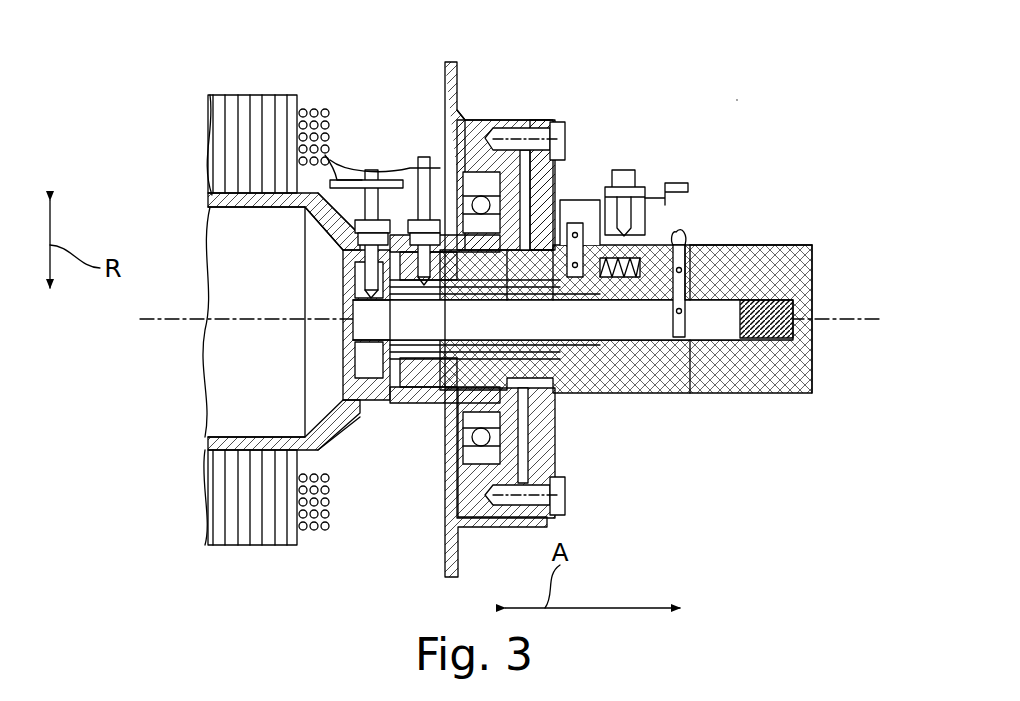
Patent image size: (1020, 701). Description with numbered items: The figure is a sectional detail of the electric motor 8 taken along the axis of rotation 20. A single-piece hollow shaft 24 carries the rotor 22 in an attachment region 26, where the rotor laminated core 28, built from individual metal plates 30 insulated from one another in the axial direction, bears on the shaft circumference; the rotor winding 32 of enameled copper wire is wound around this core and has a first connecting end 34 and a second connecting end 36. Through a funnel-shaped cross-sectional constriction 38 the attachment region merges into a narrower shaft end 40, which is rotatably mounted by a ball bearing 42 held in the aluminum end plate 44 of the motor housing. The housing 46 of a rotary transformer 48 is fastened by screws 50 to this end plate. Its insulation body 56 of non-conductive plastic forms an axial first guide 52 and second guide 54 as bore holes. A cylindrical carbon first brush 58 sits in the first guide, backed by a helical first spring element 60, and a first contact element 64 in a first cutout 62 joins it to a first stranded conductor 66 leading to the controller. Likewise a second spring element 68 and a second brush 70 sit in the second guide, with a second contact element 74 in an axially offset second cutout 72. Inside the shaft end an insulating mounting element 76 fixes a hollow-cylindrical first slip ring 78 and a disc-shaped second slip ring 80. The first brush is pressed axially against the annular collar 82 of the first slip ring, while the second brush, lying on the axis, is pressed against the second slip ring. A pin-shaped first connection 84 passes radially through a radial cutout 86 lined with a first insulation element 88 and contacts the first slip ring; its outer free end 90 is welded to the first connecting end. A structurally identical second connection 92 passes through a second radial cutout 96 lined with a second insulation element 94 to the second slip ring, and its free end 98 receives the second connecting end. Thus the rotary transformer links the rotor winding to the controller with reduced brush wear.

The electric motor 8 is at (737, 100).
The axis of rotation 20 is at (205, 330).
The rotor 22 is at (268, 140).
The hollow shaft 24 is at (208, 200).
The attachment region 26 is at (215, 190).
The rotor laminated core 28 is at (240, 140).
The individual metal plates 30 is at (215, 540).
The rotor winding 32 is at (314, 113).
The first connecting end 34 is at (403, 165).
The second connecting end 36 is at (338, 150).
The cross-sectional constriction 38 is at (305, 425).
The shaft end 40 is at (405, 403).
The bearing 42 is at (500, 120).
The end plate 44 is at (452, 68).
The housing 46 is at (565, 230).
The rotary transformer 48 is at (790, 245).
The screws 50 is at (560, 130).
The first guide 52 is at (540, 260).
The second guide 54 is at (740, 393).
The insulation body 56 is at (800, 365).
The first brush 58 is at (552, 150).
The first spring element 60 is at (638, 262).
The first cutout 62 is at (583, 300).
The first contact element 64 is at (630, 225).
The first stranded conductor 66 is at (664, 180).
The second spring element 68 is at (793, 300).
The second brush 70 is at (668, 335).
The second cutout 72 is at (700, 250).
The second contact element 74 is at (688, 258).
The mounting element 76 is at (356, 412).
The first slip ring 78 is at (445, 380).
The second slip ring 80 is at (365, 320).
The collar 82 is at (530, 430).
The first connection 84 is at (462, 165).
The radial cutout 86 is at (355, 272).
The first insulation element 88 is at (483, 172).
The free end 90 is at (424, 160).
The second connection 92 is at (343, 260).
The second insulation element 94 is at (365, 235).
The second radial cutout 96 is at (360, 225).
The free end 98 is at (410, 235).